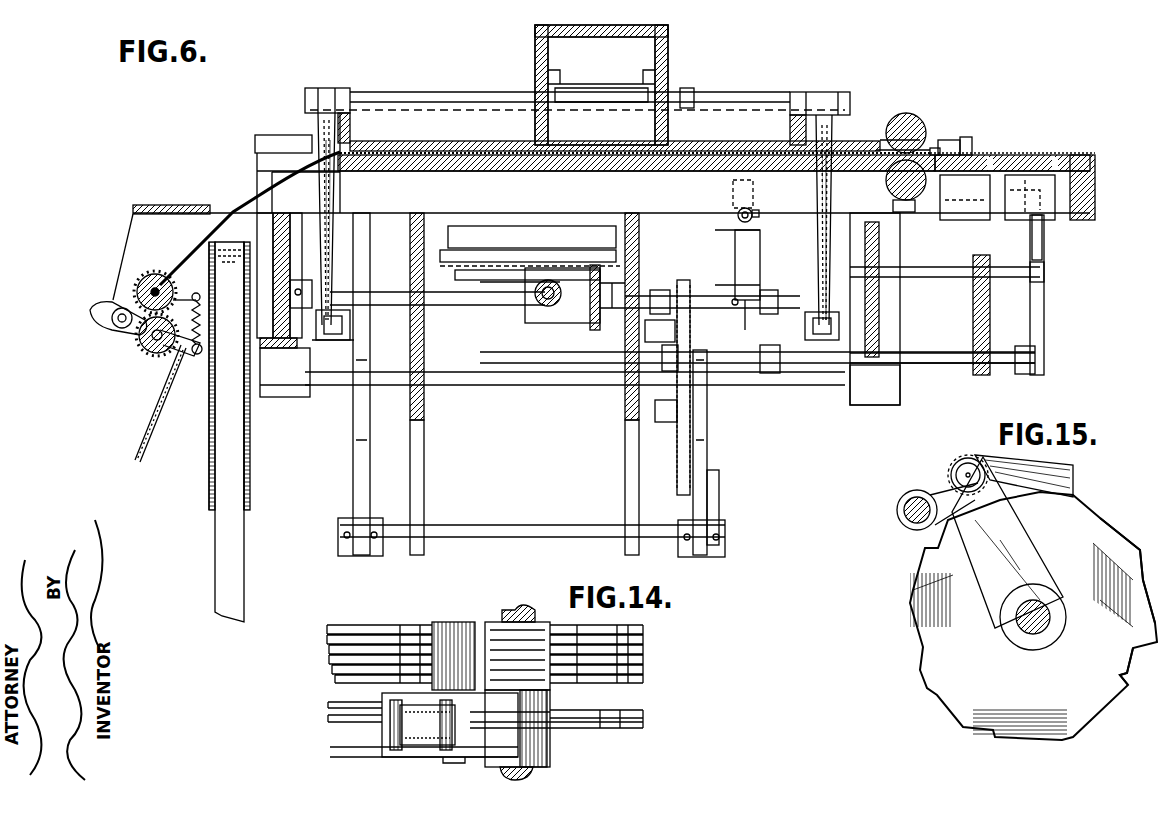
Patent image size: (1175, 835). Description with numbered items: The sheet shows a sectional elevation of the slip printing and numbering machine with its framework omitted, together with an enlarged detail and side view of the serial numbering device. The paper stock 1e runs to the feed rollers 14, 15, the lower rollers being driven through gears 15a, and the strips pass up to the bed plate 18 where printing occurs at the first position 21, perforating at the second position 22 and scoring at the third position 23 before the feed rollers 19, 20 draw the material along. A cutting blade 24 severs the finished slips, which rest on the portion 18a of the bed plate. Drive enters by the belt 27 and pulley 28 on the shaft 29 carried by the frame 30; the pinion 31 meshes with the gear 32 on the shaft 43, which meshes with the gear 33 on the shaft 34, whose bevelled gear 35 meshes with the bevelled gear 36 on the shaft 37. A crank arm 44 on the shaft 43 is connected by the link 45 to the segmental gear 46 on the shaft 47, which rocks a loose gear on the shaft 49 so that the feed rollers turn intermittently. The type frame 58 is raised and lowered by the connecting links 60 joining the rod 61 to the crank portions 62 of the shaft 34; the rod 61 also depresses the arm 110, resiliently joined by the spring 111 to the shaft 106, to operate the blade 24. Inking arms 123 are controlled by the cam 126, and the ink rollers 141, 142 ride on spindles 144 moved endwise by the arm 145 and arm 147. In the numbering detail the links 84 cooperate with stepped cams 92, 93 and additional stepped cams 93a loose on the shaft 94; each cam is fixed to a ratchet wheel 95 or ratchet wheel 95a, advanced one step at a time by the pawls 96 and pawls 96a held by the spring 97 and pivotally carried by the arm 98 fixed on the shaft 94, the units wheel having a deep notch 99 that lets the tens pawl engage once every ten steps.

In FIG. 6, the stock 1e is at (143, 426).
In FIG. 6, the feed roller 14 is at (153, 280).
In FIG. 6, the feed roller 15 is at (150, 352).
In FIG. 6, the gears 15a is at (111, 324).
In FIG. 6, the bed plate 18 is at (398, 165).
In FIG. 6, the portion of the bed plate 18a is at (985, 155).
In FIG. 6, the feed roller 19 is at (947, 130).
In FIG. 6, the feed roller 20 is at (905, 212).
In FIG. 6, the first position 21 is at (462, 150).
In FIG. 6, the second position 22 is at (616, 150).
In FIG. 6, the third position 23 is at (718, 150).
In FIG. 6, the cutting blade 24 is at (968, 150).
In FIG. 6, the belt 27 is at (235, 530).
In FIG. 6, the pulley 28 is at (250, 450).
In FIG. 6, the shaft 29 is at (460, 386).
In FIG. 6, the frame 30 is at (282, 385).
In FIG. 6, the pinion 31 is at (692, 388).
In FIG. 6, the gear 32 is at (700, 342).
In FIG. 6, the gear 33 is at (690, 295).
In FIG. 6, the shaft 34 is at (614, 310).
In FIG. 6, the bevelled gear 35 is at (568, 325).
In FIG. 6, the bevelled gear 36 is at (518, 305).
In FIG. 6, the shaft 37 is at (548, 312).
In FIG. 6, the shaft 43 is at (948, 366).
In FIG. 6, the crank arm 44 is at (1036, 352).
In FIG. 6, the link 45 is at (1040, 318).
In FIG. 6, the segmental gear 46 is at (1040, 237).
In FIG. 6, the shaft 47 is at (1006, 268).
In FIG. 6, the shaft 49 is at (975, 185).
In FIG. 6, the frame 58 is at (390, 100).
In FIG. 6, the connecting links 60 is at (334, 227).
In FIG. 6, the rod 61 is at (330, 95).
In FIG. 6, the crank portions 62 is at (822, 345).
In FIG. 6, the shaft 106 is at (945, 145).
In FIG. 6, the arm 110 is at (865, 140).
In FIG. 6, the spring 111 is at (925, 120).
In FIG. 6, the arms 123 is at (353, 442).
In FIG. 6, the cam 126 is at (716, 482).
In FIG. 6, the rollers 141 is at (455, 240).
In FIG. 6, the roller 142 is at (490, 228).
In FIG. 6, the spindles 144 is at (730, 240).
In FIG. 6, the arm 145 is at (752, 240).
In FIG. 6, the arm 147 is at (770, 213).
In FIG. 14, the links 84 is at (327, 665).
In FIG. 14, the stepped cam 92 is at (588, 722).
In FIG. 14, the stepped cam 93 is at (597, 710).
In FIG. 14, the stepped cams 93a is at (572, 680).
In FIG. 14, the shaft 94 is at (512, 614).
In FIG. 15, the shaft 94 is at (1036, 630).
In FIG. 14, the ratchet wheel 95 is at (645, 725).
In FIG. 15, the ratchet wheel 95 is at (963, 693).
In FIG. 14, the ratchet wheels 95a is at (643, 672).
In FIG. 15, the ratchet wheels 95a is at (1098, 530).
In FIG. 14, the pawls 96 is at (463, 727).
In FIG. 15, the pawls 96 is at (940, 488).
In FIG. 15, the pawls 96a is at (1075, 468).
In FIG. 15, the spring 97 is at (952, 487).
In FIG. 14, the arm 98 is at (475, 747).
In FIG. 15, the arm 98 is at (942, 620).
In FIG. 15, the deep notch 99 is at (1127, 670).